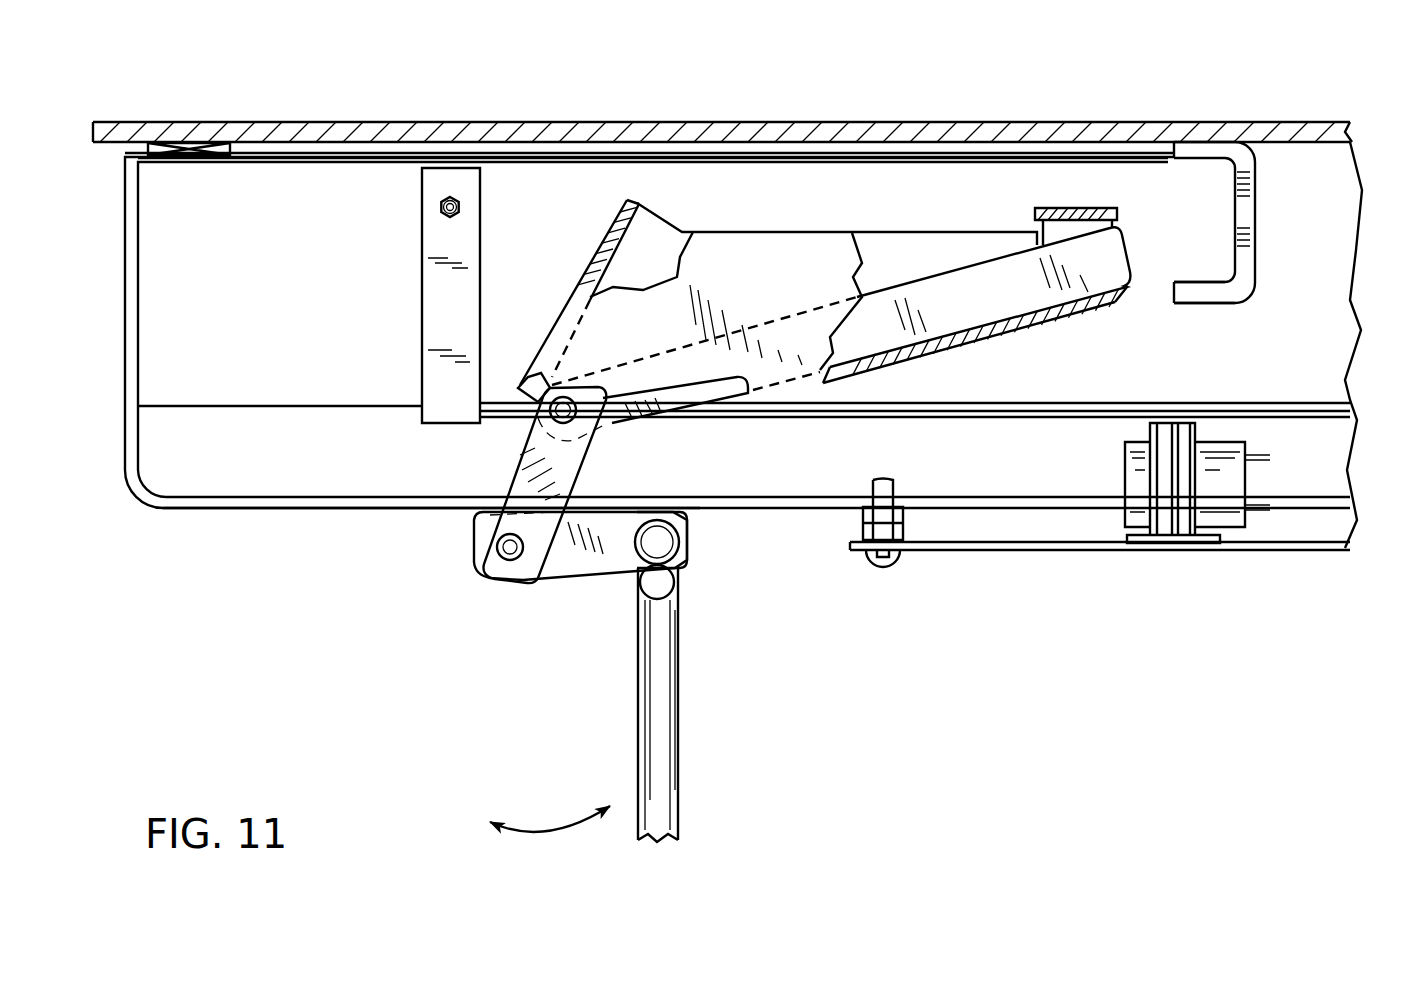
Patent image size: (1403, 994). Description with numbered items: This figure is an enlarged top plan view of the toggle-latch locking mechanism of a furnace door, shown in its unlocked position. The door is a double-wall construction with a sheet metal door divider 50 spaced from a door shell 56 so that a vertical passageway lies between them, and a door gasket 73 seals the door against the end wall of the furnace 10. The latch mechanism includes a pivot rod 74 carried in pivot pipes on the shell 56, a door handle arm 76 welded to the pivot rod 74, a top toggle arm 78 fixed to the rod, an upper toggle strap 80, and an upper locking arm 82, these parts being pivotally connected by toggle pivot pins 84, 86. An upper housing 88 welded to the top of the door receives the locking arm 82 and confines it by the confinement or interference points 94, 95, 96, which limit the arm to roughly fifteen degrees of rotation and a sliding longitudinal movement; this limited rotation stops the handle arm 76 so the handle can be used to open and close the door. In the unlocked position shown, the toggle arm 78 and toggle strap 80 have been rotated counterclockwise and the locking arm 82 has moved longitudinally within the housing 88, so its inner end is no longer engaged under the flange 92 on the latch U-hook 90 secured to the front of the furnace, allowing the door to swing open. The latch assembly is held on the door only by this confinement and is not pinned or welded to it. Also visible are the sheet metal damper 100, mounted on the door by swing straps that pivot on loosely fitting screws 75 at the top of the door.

The furnace 10 is at (530, 122).
The door gasket 73 is at (200, 140).
The door divider 50 is at (248, 406).
The door shell 56 is at (288, 508).
The damper 100 is at (962, 418).
The screws 75 is at (440, 207).
The upper housing 88 is at (593, 250).
The upper locking arm 82 is at (983, 262).
The confinement point 94 is at (1055, 208).
The upper latch U-hook 90 is at (1262, 232).
The flange 92 is at (1197, 303).
The confinement point 95 is at (543, 376).
The upper toggle strap 80 is at (523, 463).
The toggle pivot pin 86 is at (548, 414).
The confinement point 96 is at (745, 400).
The toggle pivot pin 84 is at (505, 555).
The top toggle arm 78 is at (613, 572).
The pivot rod 74 is at (668, 548).
The door handle arm 76 is at (680, 763).